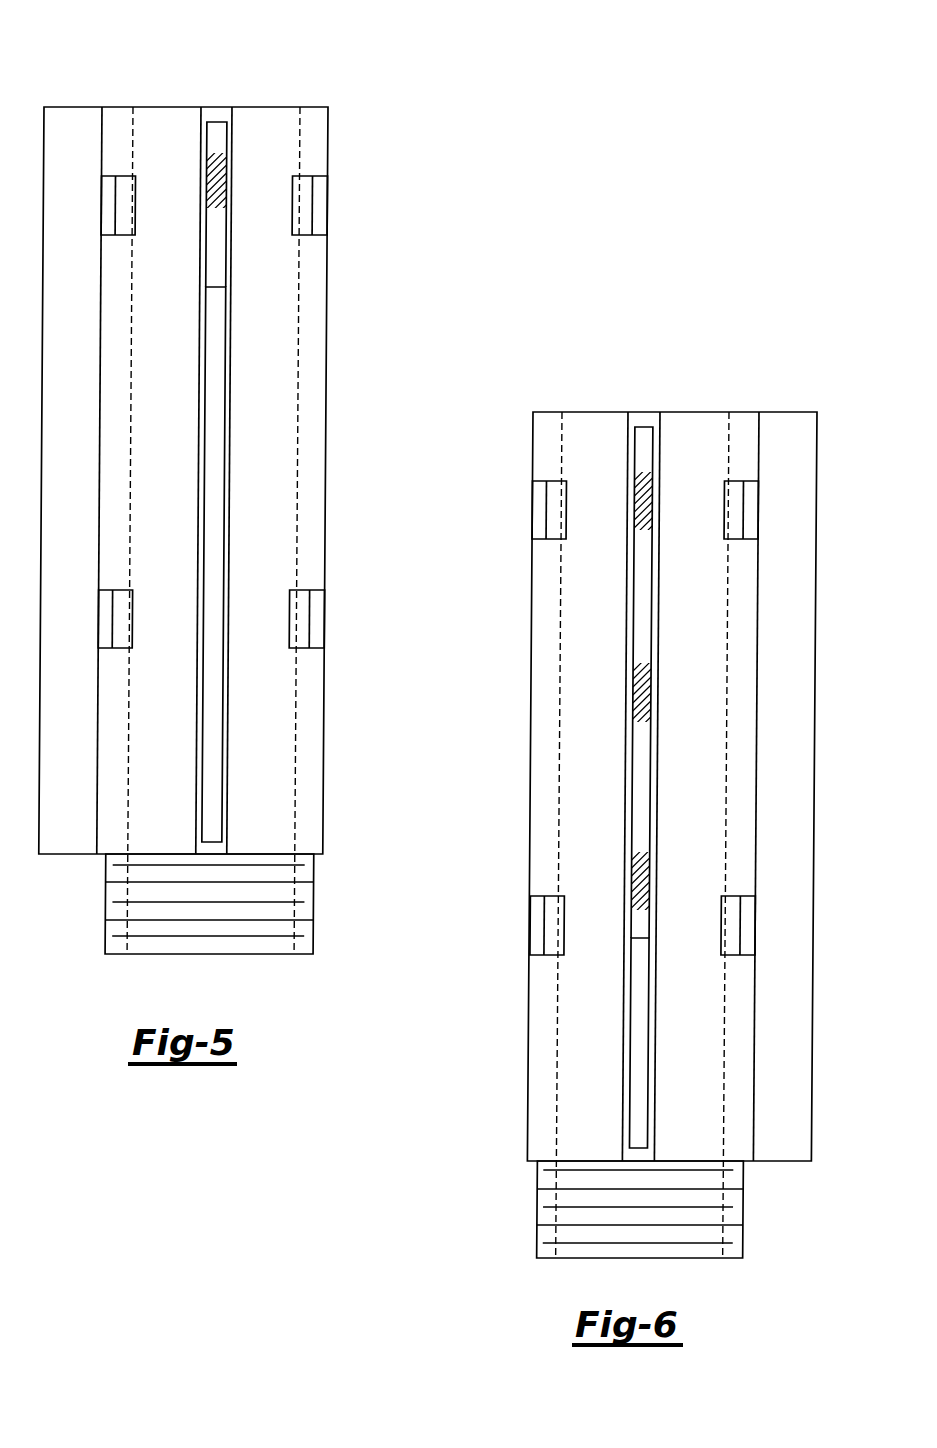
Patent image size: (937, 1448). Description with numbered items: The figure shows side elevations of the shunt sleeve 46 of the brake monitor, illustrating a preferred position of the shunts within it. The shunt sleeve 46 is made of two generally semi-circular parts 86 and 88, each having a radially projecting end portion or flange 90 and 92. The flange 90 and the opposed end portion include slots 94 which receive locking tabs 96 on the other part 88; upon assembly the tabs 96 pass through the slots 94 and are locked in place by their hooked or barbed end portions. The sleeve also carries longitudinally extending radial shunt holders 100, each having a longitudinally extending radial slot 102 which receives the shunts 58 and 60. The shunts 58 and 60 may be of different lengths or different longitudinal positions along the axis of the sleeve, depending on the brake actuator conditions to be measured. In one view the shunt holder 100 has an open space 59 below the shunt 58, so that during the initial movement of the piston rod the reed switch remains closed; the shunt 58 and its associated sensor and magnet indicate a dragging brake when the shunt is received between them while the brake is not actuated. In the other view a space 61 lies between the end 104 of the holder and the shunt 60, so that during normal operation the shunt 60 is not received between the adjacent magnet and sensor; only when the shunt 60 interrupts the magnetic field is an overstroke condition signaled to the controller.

In FIG. 5, the shunt sleeve 46 is at (248, 542).
In FIG. 6, the shunt sleeve 46 is at (636, 785).
In FIG. 5, the shunt 58 is at (215, 143).
In FIG. 5, the open space 59 is at (215, 410).
In FIG. 6, the shunt 60 is at (640, 428).
In FIG. 6, the space 61 is at (642, 1033).
In FIG. 5, the semi-circular part 86 is at (258, 527).
In FIG. 6, the semi-circular part 88 is at (636, 751).
In FIG. 5, the radially projecting flange 90 is at (70, 128).
In FIG. 6, the radially projecting flange 92 is at (788, 432).
In FIG. 5, the slots 94 is at (322, 215).
In FIG. 6, the locking tabs 96 is at (541, 498).
In FIG. 5, the radial shunt holder 100 is at (202, 152).
In FIG. 6, the radial shunt holder 100 is at (627, 477).
In FIG. 5, the longitudinally extending radial slot 102 is at (210, 487).
In FIG. 6, the longitudinally extending radial slot 102 is at (633, 768).
In FIG. 5, the end 104 is at (245, 935).
In FIG. 6, the end 104 is at (547, 1202).